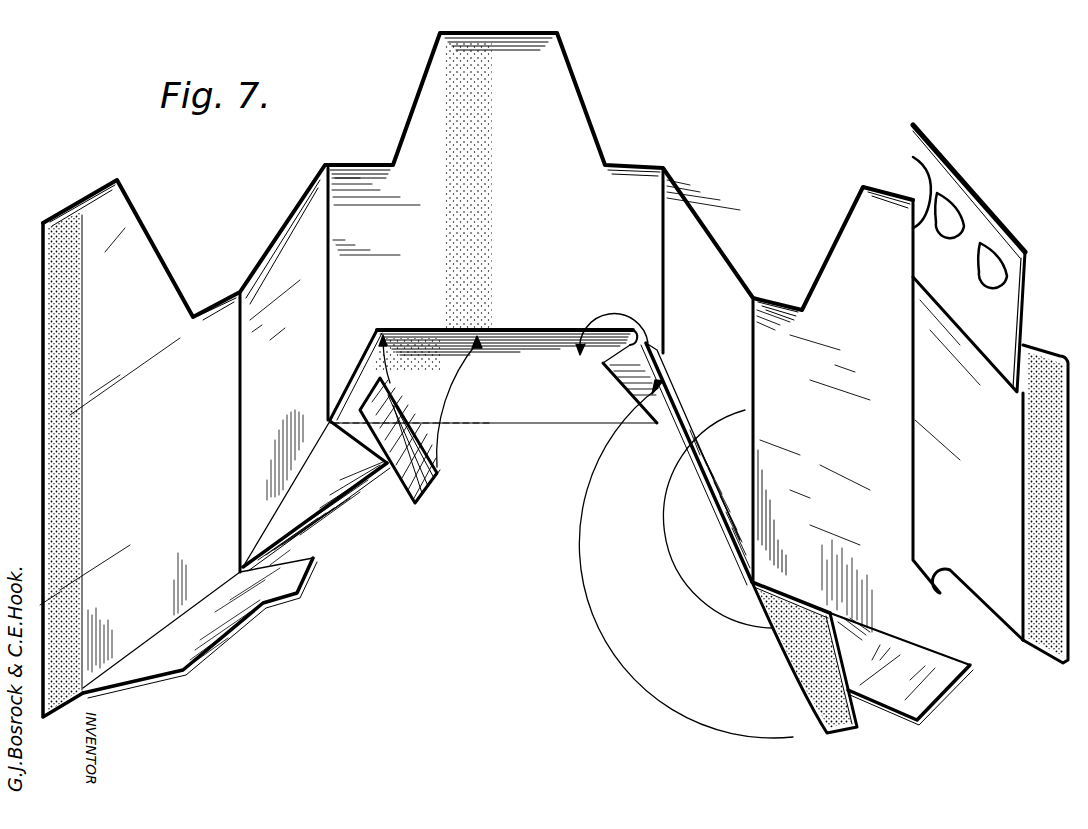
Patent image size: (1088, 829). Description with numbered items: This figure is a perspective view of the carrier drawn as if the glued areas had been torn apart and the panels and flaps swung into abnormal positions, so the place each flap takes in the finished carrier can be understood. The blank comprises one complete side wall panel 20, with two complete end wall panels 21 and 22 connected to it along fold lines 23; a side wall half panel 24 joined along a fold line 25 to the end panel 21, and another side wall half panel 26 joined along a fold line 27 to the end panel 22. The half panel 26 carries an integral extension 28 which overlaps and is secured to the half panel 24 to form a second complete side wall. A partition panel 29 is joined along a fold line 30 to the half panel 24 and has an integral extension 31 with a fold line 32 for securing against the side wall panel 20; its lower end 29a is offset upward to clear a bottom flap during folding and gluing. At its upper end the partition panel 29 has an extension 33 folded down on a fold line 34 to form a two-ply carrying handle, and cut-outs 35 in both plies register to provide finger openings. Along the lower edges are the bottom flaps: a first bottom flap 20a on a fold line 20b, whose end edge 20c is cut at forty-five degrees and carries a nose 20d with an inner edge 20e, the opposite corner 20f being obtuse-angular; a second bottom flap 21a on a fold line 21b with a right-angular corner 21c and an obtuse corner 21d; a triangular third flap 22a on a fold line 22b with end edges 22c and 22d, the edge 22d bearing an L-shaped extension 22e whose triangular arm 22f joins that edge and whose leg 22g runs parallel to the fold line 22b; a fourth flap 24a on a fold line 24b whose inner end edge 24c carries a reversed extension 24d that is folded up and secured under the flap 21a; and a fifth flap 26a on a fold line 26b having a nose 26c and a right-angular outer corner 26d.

The side wall panel 20 is at (500, 186).
The bottom flap 20a is at (507, 364).
The fold line 20b is at (550, 424).
The end edge 20c is at (624, 388).
The nose 20d is at (610, 316).
The inner edge of nose 20e is at (612, 357).
The corner 20f is at (388, 332).
The end wall panel 21 is at (700, 298).
The bottom flap 21a is at (684, 447).
The fold line 21b is at (720, 510).
The right-angular corner 21c is at (663, 362).
The obtuse angular corner 21d is at (708, 470).
The end wall panel 22 is at (275, 310).
The bottom flap 22a is at (337, 499).
The fold line 22b is at (303, 463).
The end edge 22c is at (308, 505).
The end edge 22d is at (360, 452).
The extension 22e is at (404, 412).
The arm of extension 22f is at (353, 423).
The leg of extension 22g is at (421, 492).
The fold lines 23 is at (336, 310).
The side wall half panel 24 is at (860, 440).
The bottom flap 24a is at (960, 706).
The fold line 24b is at (876, 632).
The inner end edge 24c is at (792, 643).
The extension 24d is at (812, 668).
The fold line 25 is at (756, 409).
The side wall half panel 26 is at (140, 458).
The bottom flap 26a is at (200, 624).
The fold line 26b is at (148, 642).
The nose 26c is at (310, 576).
The outer corner 26d is at (178, 676).
The fold line 27 is at (240, 412).
The integral extension 28 is at (50, 352).
The partition panel 29 is at (968, 420).
The lower end of partition panel 29a is at (985, 600).
The fold line 30 is at (915, 428).
The integral extension 31 is at (1044, 346).
The fold line 32 is at (1023, 522).
The integral extension 33 is at (976, 334).
The fold line 34 is at (978, 197).
The cut-outs 35 is at (980, 270).